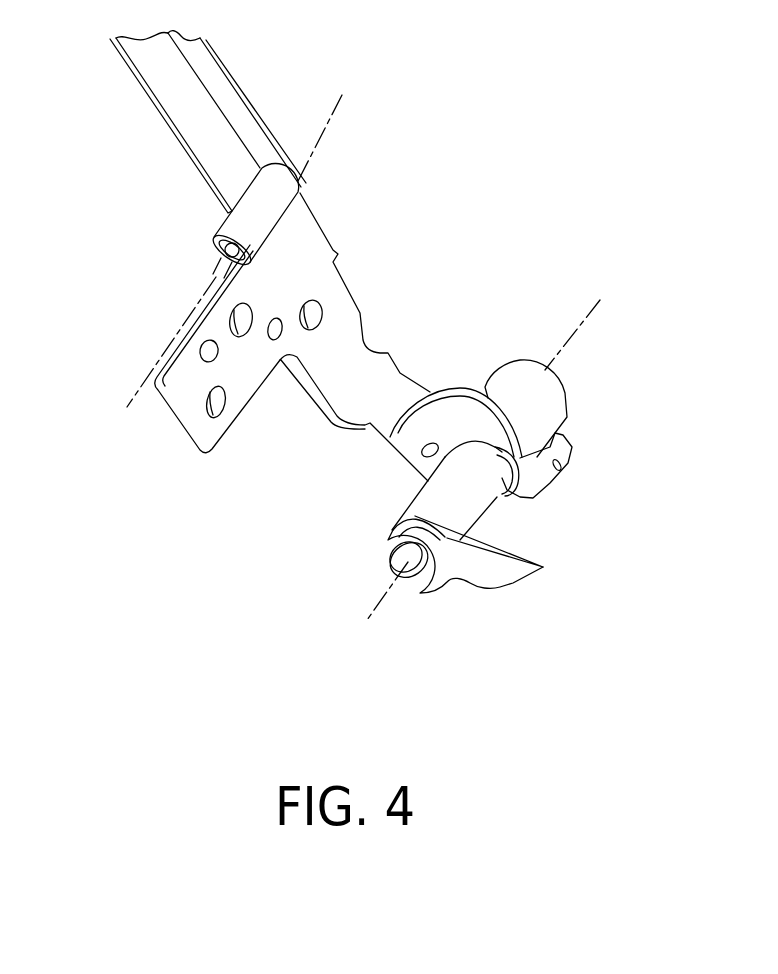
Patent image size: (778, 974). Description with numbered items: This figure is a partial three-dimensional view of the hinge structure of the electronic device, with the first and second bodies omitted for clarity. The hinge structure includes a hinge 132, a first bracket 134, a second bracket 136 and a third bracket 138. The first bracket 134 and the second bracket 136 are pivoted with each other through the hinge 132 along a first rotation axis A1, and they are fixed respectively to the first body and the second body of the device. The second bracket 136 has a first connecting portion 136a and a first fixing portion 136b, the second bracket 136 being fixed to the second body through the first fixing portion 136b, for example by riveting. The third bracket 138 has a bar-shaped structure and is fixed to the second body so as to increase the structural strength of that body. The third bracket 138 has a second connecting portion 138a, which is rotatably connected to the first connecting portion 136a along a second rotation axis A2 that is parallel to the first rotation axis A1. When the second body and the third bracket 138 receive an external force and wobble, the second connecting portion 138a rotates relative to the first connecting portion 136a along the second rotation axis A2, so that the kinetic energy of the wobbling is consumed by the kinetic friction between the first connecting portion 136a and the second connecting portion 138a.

The hinge 132 is at (468, 505).
The first bracket 134 is at (457, 575).
The second bracket 136 is at (356, 337).
The first connecting portion 136a is at (300, 221).
The first fixing portion 136b is at (187, 395).
The third bracket 138 is at (167, 93).
The second connecting portion 138a is at (220, 248).
The first rotation axis A1 is at (592, 312).
The second rotation axis A2 is at (136, 387).